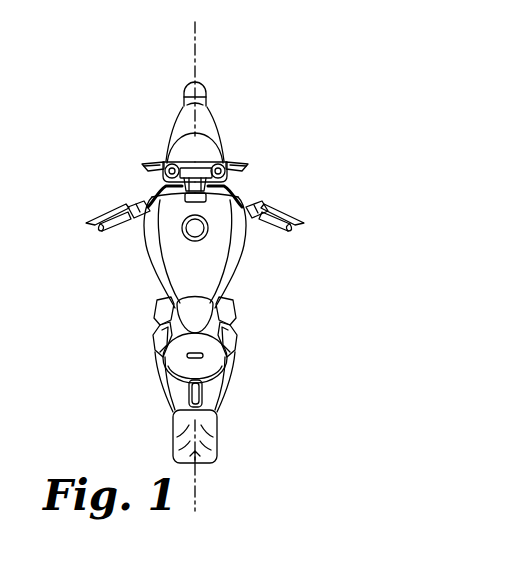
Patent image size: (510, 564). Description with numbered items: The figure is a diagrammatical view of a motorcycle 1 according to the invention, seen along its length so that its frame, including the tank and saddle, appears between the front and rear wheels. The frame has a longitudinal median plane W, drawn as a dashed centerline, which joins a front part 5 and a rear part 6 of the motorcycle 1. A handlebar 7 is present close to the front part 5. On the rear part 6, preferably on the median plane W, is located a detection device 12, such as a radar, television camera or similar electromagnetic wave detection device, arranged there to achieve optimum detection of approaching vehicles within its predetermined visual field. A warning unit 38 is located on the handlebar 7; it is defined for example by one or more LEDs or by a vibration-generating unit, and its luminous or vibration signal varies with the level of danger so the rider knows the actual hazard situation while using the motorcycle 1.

The motorcycle 1 is at (339, 272).
The front part 5 is at (208, 79).
The rear part 6 is at (222, 474).
The handlebar 7 is at (272, 195).
The detection device 12 is at (202, 400).
The warning unit 38 is at (134, 210).
The longitudinal median plane W is at (195, 32).